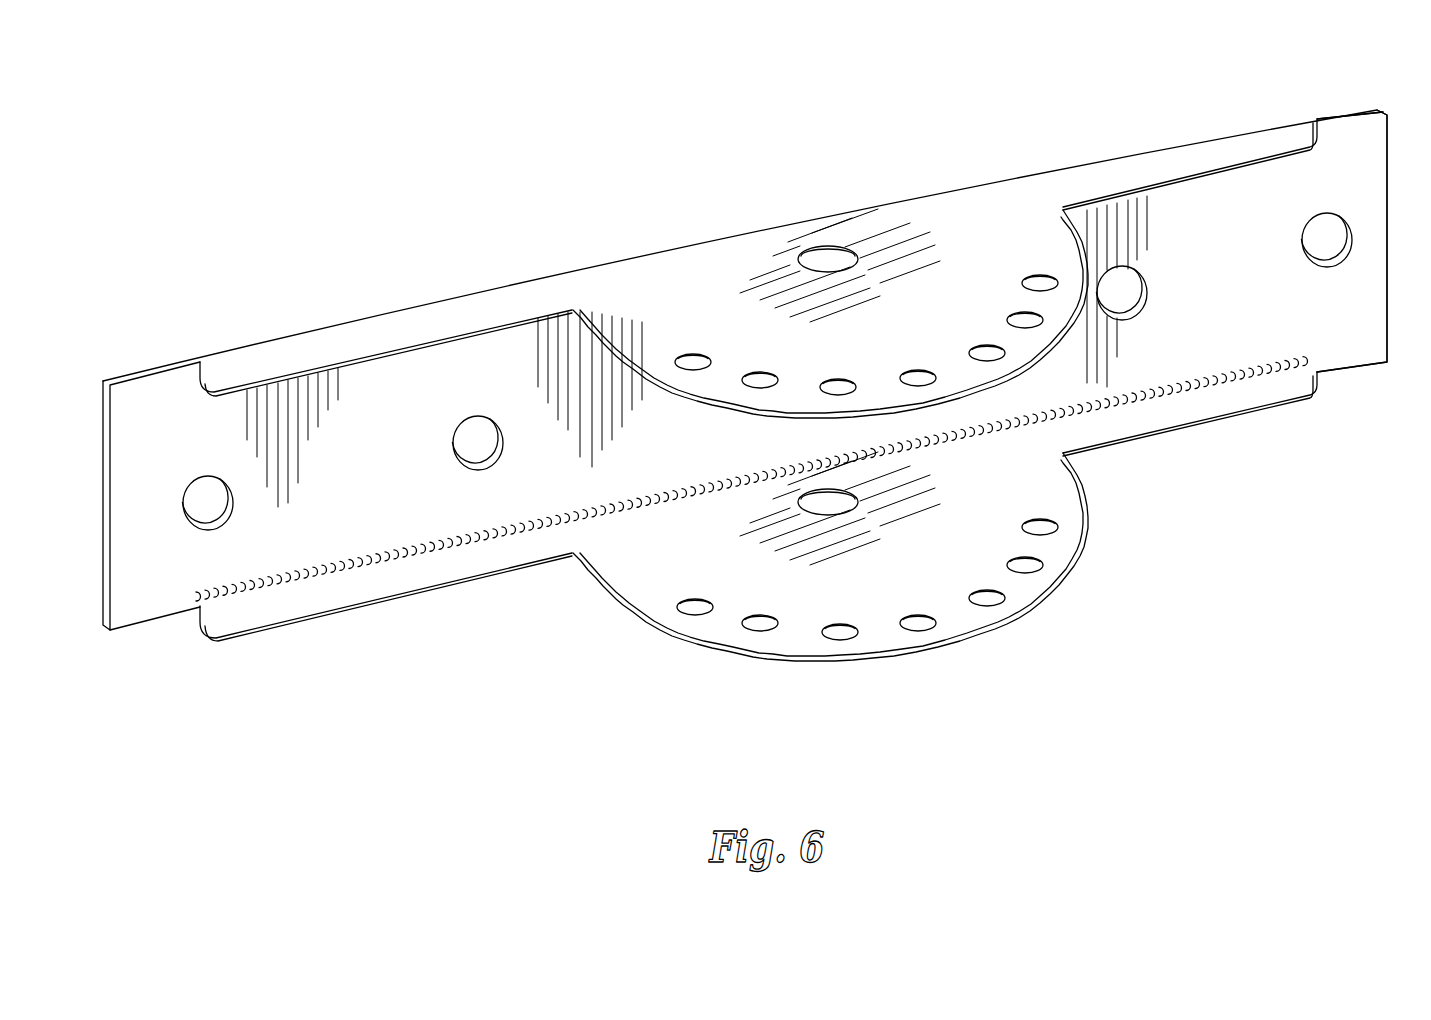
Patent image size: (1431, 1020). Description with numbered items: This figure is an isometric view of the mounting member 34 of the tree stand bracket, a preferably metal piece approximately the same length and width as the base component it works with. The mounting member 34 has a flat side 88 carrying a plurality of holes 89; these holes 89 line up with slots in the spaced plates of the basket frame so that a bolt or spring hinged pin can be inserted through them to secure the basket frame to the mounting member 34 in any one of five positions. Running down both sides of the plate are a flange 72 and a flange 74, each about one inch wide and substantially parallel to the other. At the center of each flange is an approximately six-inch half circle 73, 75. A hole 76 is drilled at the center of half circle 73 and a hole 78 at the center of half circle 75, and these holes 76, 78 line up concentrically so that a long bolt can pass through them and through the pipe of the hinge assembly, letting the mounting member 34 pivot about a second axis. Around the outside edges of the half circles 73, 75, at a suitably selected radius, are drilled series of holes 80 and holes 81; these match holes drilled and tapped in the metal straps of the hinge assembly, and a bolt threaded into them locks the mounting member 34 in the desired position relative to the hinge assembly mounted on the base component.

The mounting member 34 is at (939, 164).
The flange 72 is at (371, 335).
The half circle 73 is at (610, 343).
The flange 74 is at (365, 590).
The half circle 75 is at (623, 587).
The hole 76 is at (810, 248).
The hole 78 is at (813, 495).
The holes 80 is at (1058, 527).
The holes 81 is at (753, 377).
The flat side 88 is at (1363, 180).
The holes 89 is at (1302, 233).